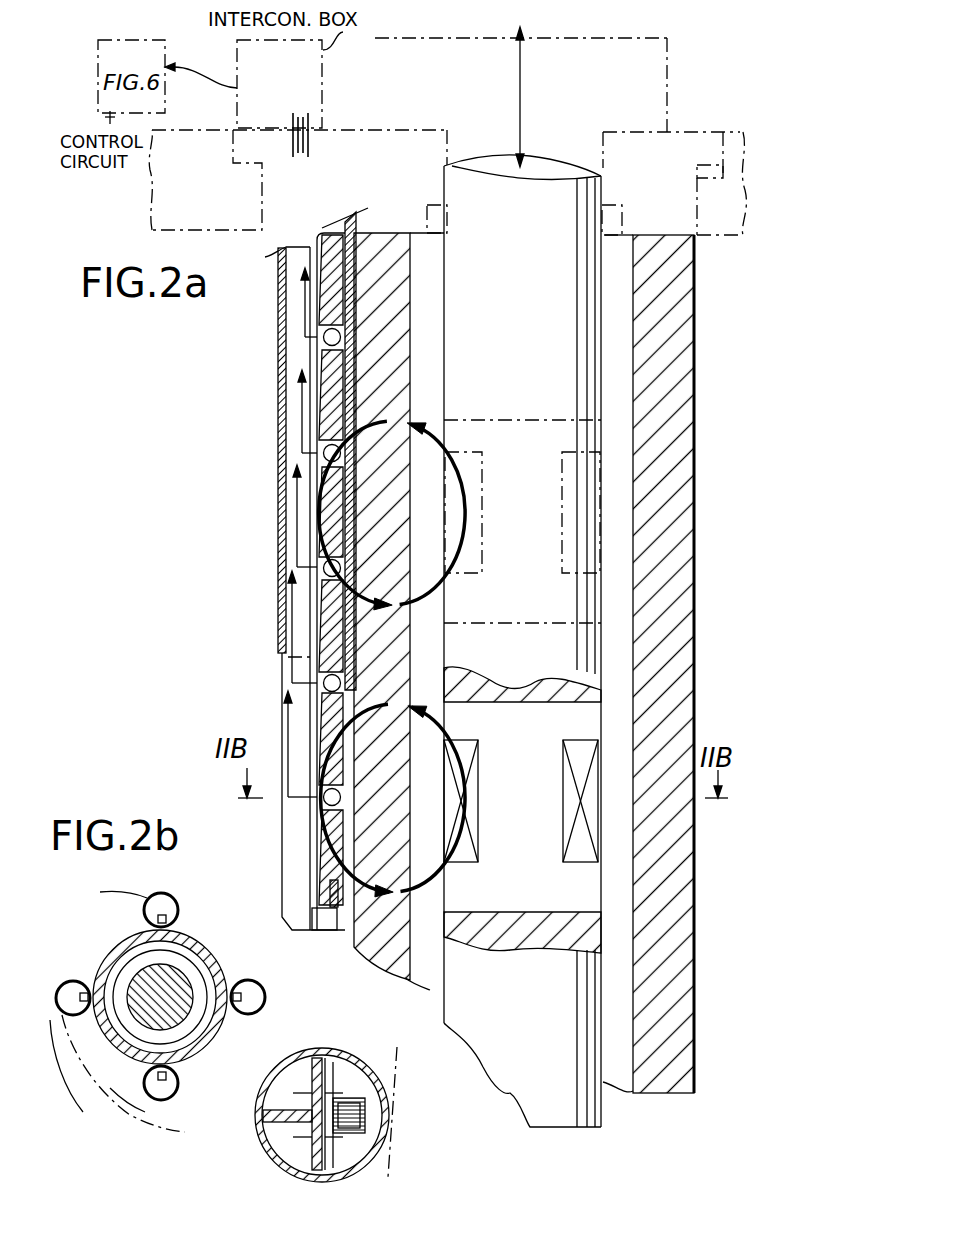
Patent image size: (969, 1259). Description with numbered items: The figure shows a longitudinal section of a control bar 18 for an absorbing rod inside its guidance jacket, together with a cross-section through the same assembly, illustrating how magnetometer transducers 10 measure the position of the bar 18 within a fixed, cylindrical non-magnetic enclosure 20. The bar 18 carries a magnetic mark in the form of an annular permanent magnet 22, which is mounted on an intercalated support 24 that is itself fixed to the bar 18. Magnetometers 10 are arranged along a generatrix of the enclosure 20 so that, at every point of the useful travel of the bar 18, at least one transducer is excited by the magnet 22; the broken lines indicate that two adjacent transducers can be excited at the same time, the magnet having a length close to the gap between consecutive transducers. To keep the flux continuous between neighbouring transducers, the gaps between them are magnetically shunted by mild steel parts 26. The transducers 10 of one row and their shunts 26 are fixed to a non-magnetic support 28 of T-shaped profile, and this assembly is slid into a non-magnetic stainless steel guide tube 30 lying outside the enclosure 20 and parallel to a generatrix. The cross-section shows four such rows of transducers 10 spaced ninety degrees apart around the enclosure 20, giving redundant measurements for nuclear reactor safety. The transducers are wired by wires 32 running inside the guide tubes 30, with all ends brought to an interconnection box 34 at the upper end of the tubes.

In FIG. 2a, the magnetometer transducer 10 is at (327, 683).
In FIG. 2b, the magnetometer transducer 10 is at (152, 921).
In FIG. 2a, the bar 18 is at (548, 986).
In FIG. 2a, the non-magnetic enclosure 20 is at (663, 1087).
In FIG. 2b, the non-magnetic enclosure 20 is at (187, 937).
In FIG. 2a, the annular permanent magnet 22 is at (582, 747).
In FIG. 2b, the annular permanent magnet 22 is at (192, 1024).
In FIG. 2a, the intercalated support 24 is at (548, 804).
In FIG. 2b, the intercalated support 24 is at (173, 1023).
In FIG. 2a, the mild steel parts 26 is at (327, 308).
In FIG. 2b, the mild steel parts 26 is at (340, 1160).
In FIG. 2a, the non-magnetic support 28 is at (282, 835).
In FIG. 2b, the non-magnetic support 28 is at (312, 1153).
In FIG. 2a, the non-magnetic guide tube 30 is at (278, 478).
In FIG. 2b, the non-magnetic guide tube 30 is at (243, 1133).
In FIG. 2a, the wires 32 is at (310, 135).
In FIG. 2a, the interconnection box 34 is at (305, 100).